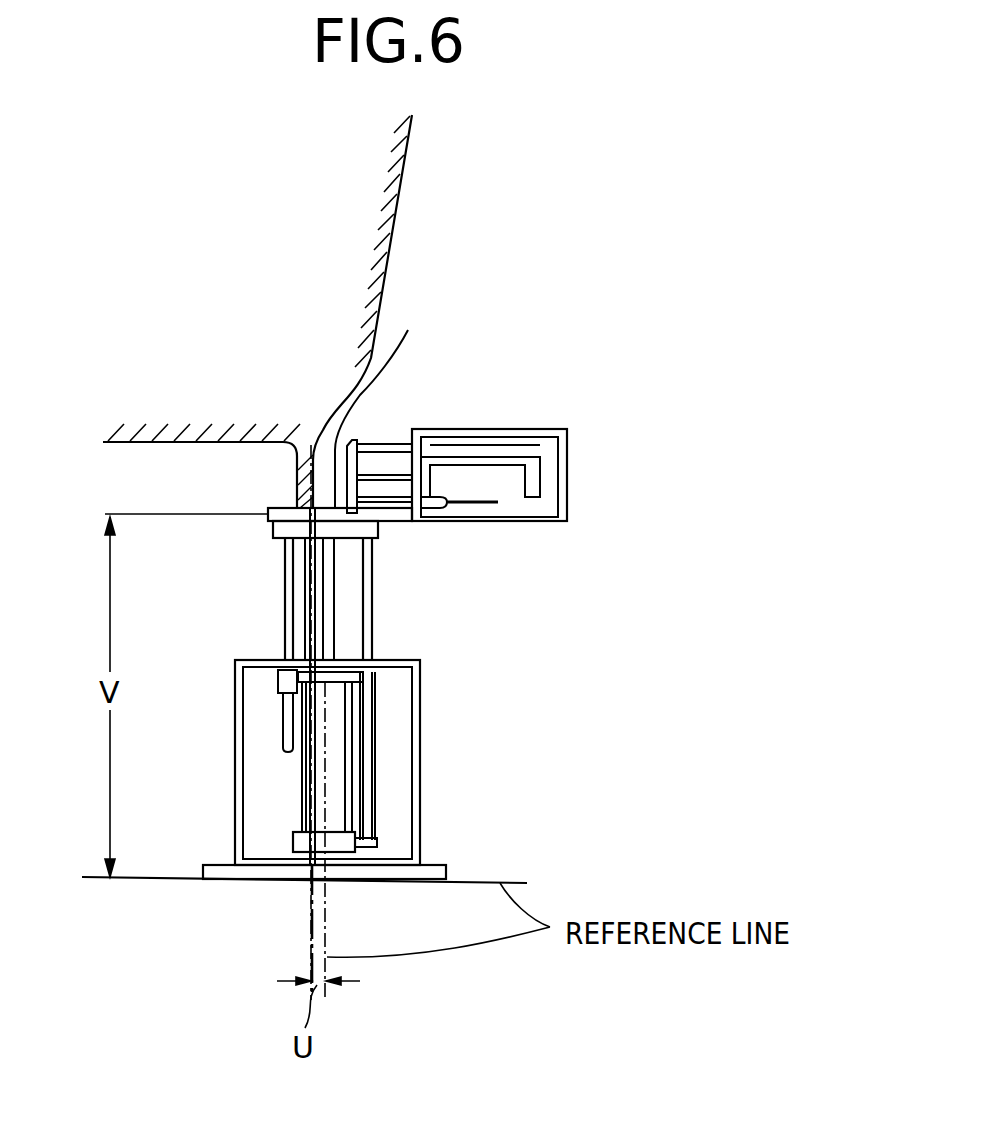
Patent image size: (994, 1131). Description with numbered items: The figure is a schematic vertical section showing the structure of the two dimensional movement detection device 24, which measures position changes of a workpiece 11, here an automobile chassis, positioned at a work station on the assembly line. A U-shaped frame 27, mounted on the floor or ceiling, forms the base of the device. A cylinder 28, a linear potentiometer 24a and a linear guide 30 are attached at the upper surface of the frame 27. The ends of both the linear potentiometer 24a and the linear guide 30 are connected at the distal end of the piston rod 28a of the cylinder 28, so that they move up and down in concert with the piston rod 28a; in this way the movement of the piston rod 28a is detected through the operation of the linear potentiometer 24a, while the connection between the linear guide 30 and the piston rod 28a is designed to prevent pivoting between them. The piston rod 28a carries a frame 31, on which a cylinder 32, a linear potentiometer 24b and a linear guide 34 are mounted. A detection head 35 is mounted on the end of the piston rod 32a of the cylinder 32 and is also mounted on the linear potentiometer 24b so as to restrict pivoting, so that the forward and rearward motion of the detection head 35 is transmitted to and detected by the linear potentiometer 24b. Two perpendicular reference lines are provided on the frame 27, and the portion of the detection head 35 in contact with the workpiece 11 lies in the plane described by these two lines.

The workpiece 11 is at (405, 190).
The detection head 35 is at (384, 403).
The piston rod 32a is at (358, 445).
The linear potentiometer 24b is at (393, 437).
The frame 31 is at (552, 429).
The cylinder 32 is at (503, 482).
The linear guide 34 is at (433, 505).
The piston rod 28a is at (275, 532).
The linear guide 30 is at (287, 617).
The linear potentiometer 24a is at (372, 642).
The U-shaped frame 27 is at (418, 762).
The two dimensional movement detection device 24 is at (200, 742).
The cylinder 28 is at (302, 790).